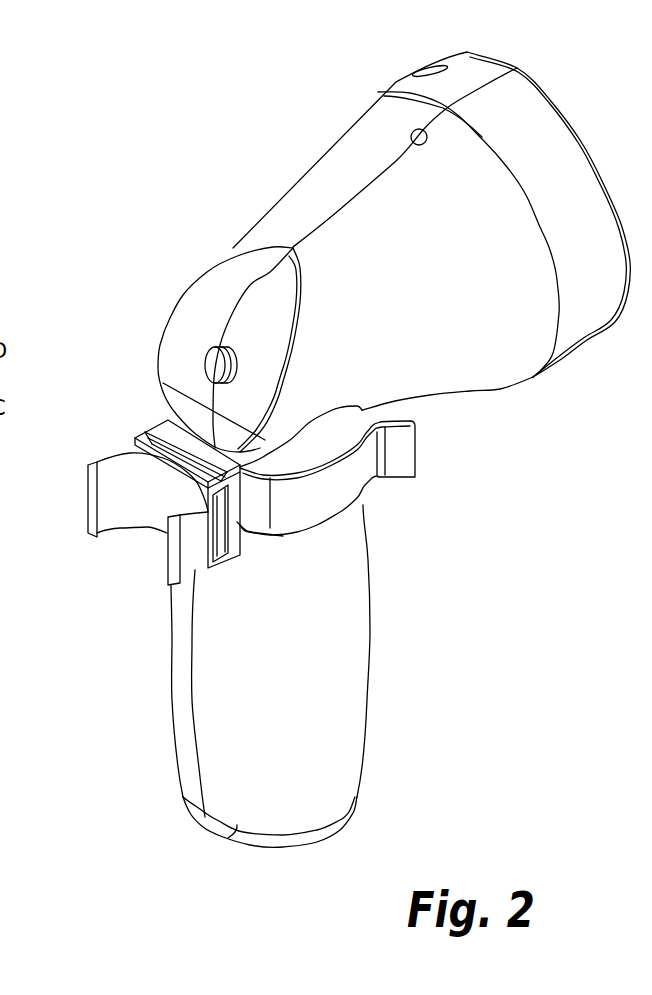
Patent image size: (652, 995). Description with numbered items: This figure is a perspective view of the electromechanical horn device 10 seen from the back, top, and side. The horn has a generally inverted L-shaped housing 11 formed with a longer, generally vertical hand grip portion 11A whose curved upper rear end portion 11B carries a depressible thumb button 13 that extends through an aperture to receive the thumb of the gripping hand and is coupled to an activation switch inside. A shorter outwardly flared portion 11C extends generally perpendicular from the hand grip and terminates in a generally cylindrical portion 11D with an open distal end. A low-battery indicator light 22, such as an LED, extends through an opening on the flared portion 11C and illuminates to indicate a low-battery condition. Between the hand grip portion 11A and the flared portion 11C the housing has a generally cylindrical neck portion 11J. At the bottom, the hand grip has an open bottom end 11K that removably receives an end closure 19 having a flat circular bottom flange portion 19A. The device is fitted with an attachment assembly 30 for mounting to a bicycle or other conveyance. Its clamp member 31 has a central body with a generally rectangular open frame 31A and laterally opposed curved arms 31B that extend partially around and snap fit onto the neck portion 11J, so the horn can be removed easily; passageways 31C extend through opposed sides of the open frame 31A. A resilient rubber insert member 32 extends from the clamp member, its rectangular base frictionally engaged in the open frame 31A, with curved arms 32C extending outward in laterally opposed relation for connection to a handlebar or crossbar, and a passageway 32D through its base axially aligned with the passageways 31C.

The electromechanical horn device 10 is at (246, 167).
The housing 11 is at (371, 597).
The hand grip portion 11A is at (297, 682).
The curved upper rear end portion 11B is at (179, 310).
The outwardly flared portion 11C is at (448, 377).
The cylindrical portion 11D is at (570, 347).
The cylindrical neck portion 11J is at (282, 535).
The open bottom end 11K is at (237, 825).
The depressible thumb button 13 is at (211, 368).
The end closure 19 is at (310, 838).
The flat circular bottom flange portion 19A is at (345, 818).
The low-battery indicator light 22 is at (411, 136).
The attachment assembly 30 is at (113, 432).
The clamp member 31 is at (360, 512).
The rectangular open frame 31A is at (237, 523).
The curved arms 31B is at (353, 512).
The passageways 31C is at (228, 545).
The insert member 32 is at (110, 523).
The curved arms 32C is at (86, 497).
The passageway 32D is at (221, 522).